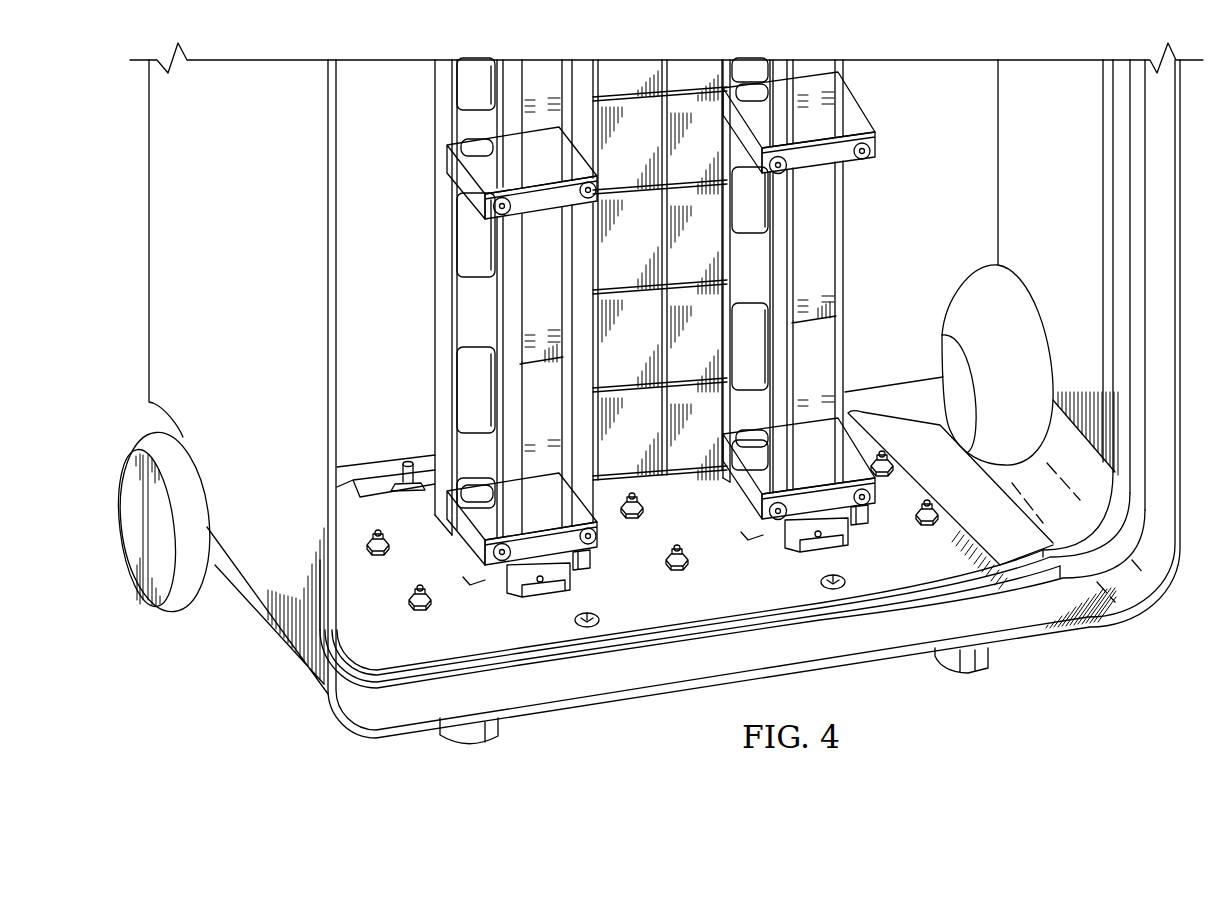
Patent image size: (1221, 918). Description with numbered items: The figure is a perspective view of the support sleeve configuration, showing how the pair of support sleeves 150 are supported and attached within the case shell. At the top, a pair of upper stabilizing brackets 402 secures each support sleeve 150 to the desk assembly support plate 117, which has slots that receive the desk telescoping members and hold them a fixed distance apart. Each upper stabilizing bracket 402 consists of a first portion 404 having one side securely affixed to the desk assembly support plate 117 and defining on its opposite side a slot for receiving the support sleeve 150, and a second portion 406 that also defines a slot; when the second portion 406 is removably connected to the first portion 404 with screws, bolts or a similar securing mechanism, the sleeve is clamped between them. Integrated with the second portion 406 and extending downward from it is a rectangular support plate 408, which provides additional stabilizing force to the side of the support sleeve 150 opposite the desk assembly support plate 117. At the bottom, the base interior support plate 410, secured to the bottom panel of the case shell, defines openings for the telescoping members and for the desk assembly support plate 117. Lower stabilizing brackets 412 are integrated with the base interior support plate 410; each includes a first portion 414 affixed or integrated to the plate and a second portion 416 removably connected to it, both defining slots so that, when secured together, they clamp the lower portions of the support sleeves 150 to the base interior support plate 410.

The desk assembly support plate 117 is at (627, 68).
The support sleeves 150 is at (541, 68).
The upper stabilizing brackets 402 is at (424, 171).
The first portion 404 is at (449, 135).
The second portion 406 is at (548, 200).
The support plate 408 is at (528, 312).
The base interior support plate 410 is at (857, 414).
The lower stabilizing brackets 412 is at (604, 560).
The first portion 414 is at (750, 467).
The second portion 416 is at (514, 584).